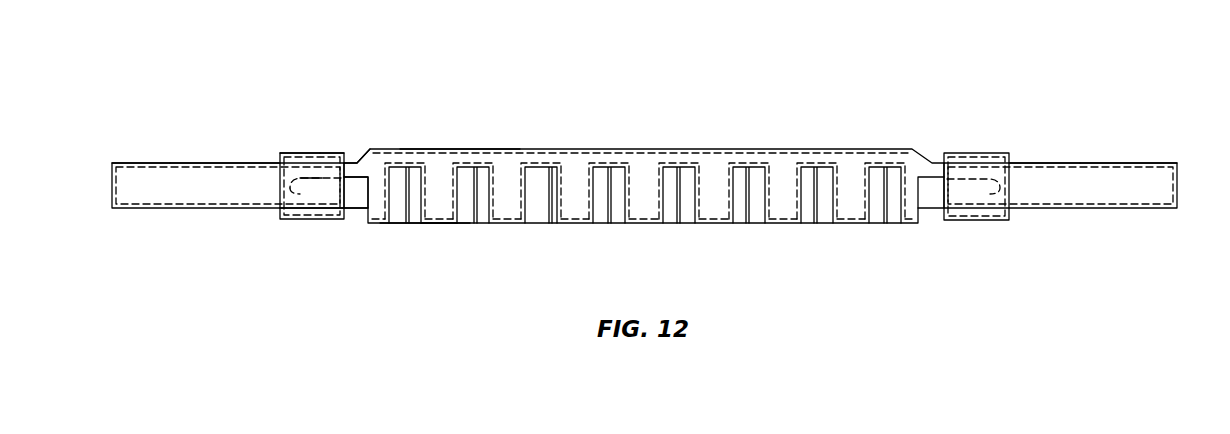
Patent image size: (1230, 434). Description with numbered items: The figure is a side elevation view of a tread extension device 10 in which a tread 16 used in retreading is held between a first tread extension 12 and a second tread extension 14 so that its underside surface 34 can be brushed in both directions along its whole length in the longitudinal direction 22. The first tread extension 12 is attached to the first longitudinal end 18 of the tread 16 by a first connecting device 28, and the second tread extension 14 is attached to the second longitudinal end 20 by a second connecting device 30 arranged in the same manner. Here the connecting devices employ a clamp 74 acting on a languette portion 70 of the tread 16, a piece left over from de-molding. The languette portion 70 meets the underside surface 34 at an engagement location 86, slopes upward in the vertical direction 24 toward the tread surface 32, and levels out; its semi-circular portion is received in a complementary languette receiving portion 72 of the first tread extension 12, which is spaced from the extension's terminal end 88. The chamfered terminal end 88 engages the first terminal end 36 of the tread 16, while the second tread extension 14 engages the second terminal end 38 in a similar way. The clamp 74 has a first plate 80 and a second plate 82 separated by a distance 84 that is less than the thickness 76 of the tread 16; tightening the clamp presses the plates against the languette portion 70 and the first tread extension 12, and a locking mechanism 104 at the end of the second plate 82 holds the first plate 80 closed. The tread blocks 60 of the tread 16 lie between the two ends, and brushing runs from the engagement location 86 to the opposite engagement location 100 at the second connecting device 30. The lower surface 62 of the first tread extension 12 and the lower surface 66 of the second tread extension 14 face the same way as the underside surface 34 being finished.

The tread extension device 10 is at (1134, 66).
The first tread extension 12 is at (228, 185).
The second tread extension 14 is at (1060, 185).
The tread 16 is at (650, 162).
The first longitudinal end 18 is at (415, 162).
The second longitudinal end 20 is at (890, 166).
The longitudinal direction 22 is at (510, 252).
The vertical direction 24 is at (527, 118).
The first connecting device 28 is at (205, 162).
The second connecting device 30 is at (1033, 163).
The tread surface 32 is at (422, 232).
The underside surface 34 is at (466, 143).
The first terminal end 36 is at (282, 185).
The second terminal end 38 is at (1010, 193).
The tread blocks 60 is at (440, 210).
The lower surface 62 is at (140, 158).
The lower surface 66 is at (1130, 157).
The languette portion 70 is at (282, 178).
The languette receiving portion 72 is at (282, 197).
The clamp 74 is at (300, 152).
The thickness 76 is at (782, 157).
The first plate 80 is at (333, 152).
The second plate 82 is at (317, 219).
The distance 84 is at (330, 174).
The engagement location 86 is at (362, 160).
The terminal end 88 is at (368, 192).
The engagement location 100 is at (928, 153).
The locking mechanism 104 is at (310, 192).